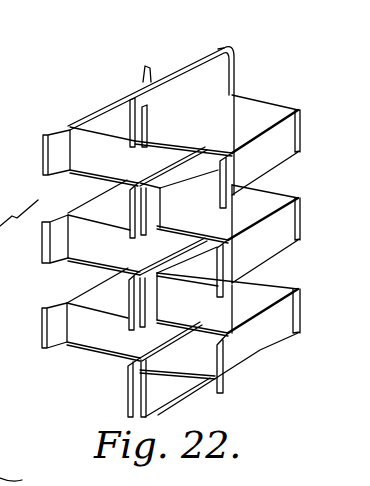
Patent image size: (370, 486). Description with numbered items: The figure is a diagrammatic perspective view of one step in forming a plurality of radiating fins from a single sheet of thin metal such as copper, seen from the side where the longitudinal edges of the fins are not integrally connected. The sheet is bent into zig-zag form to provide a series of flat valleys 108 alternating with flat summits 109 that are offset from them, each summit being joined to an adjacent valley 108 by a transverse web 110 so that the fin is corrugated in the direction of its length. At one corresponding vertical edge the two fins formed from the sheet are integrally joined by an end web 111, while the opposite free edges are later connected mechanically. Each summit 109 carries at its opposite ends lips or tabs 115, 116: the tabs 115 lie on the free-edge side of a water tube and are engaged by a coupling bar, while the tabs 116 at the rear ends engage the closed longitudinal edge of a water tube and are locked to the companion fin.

The flat valley 108 is at (190, 76).
The flat summit 109 is at (80, 146).
The transverse web 110 is at (132, 116).
The end web 111 is at (257, 31).
The lip or tab 115 is at (160, 117).
The lip or tab 116 is at (143, 73).